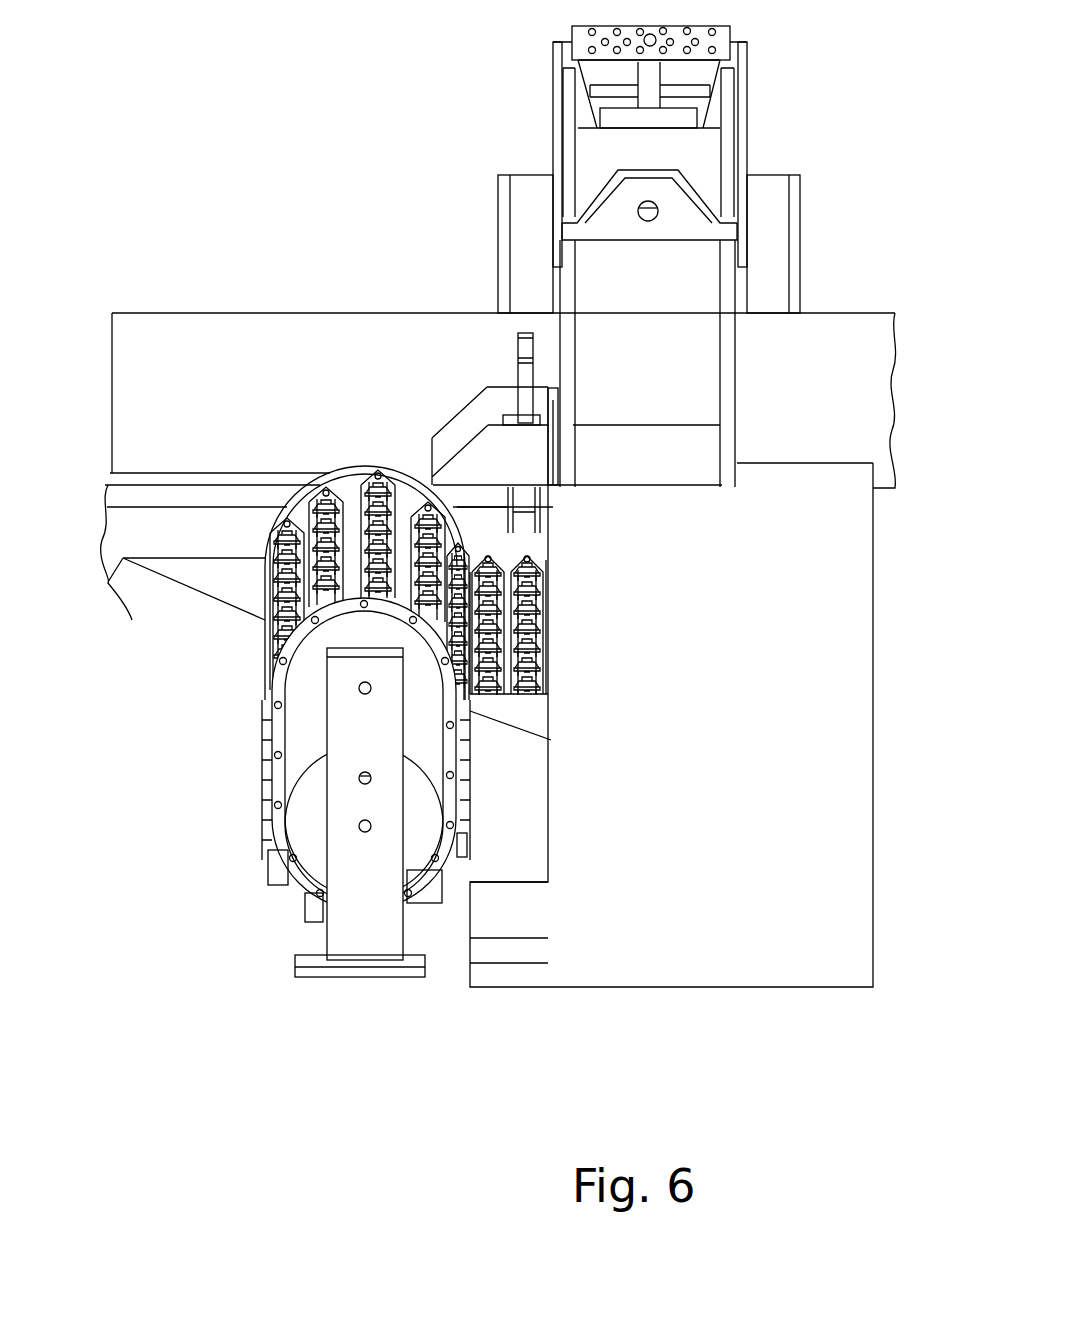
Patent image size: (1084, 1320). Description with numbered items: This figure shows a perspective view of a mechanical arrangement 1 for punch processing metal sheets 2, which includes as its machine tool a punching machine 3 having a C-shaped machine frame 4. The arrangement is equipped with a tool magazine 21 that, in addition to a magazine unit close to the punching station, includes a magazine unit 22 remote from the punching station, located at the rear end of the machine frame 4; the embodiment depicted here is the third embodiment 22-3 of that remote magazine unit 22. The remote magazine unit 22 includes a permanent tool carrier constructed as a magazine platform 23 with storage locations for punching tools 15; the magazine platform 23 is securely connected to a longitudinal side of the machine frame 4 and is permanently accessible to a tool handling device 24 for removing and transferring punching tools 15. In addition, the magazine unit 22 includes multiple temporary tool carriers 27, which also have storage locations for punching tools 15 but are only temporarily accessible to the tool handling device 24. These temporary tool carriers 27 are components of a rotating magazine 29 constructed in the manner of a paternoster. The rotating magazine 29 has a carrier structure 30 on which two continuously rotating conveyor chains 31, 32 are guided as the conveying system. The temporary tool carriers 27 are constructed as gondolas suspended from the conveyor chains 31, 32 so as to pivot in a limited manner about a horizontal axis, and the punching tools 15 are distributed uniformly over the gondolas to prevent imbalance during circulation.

The mechanical arrangement 1 is at (452, 272).
The metal sheet 2 is at (188, 345).
The punching machine 3 is at (818, 296).
The machine frame 4 is at (752, 151).
The punching tool 15 is at (544, 624).
The tool magazine 21 is at (541, 918).
The magazine unit 22 is at (541, 918).
The magazine unit embodiment 22-3 is at (490, 790).
The magazine platform 23 is at (530, 706).
The tool handling device 24 is at (565, 463).
The temporary tool carrier 27 is at (455, 527).
The rotating magazine 29 is at (250, 875).
The carrier structure 30 is at (370, 937).
The conveyor chain 31 is at (345, 463).
The conveyor chain 32 is at (298, 873).